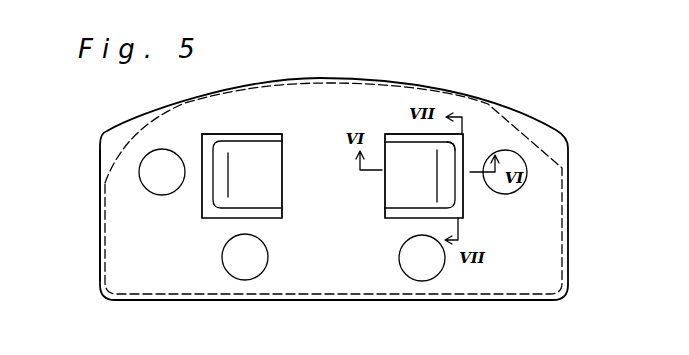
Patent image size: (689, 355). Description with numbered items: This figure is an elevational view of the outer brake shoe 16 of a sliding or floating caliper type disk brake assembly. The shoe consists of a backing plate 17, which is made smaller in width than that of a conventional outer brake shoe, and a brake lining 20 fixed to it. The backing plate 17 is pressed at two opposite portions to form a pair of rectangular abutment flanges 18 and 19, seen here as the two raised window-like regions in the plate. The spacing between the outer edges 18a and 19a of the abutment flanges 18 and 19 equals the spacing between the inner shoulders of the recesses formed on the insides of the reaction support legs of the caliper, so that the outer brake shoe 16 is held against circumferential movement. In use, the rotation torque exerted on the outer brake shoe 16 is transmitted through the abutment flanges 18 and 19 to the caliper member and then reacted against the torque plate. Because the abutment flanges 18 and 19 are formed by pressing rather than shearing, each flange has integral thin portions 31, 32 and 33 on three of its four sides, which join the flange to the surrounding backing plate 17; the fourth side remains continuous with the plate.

The outer brake shoe 16 is at (442, 81).
The backing plate 17 is at (357, 289).
The abutment flange 18 is at (266, 150).
The outer edge 18a is at (210, 190).
The abutment flange 19 is at (386, 190).
The outer edge 19a is at (455, 196).
The brake lining 20 is at (113, 218).
The integral thin portion 31 is at (458, 149).
The integral thin portion 32 is at (224, 140).
The integral thin portion 33 is at (207, 160).